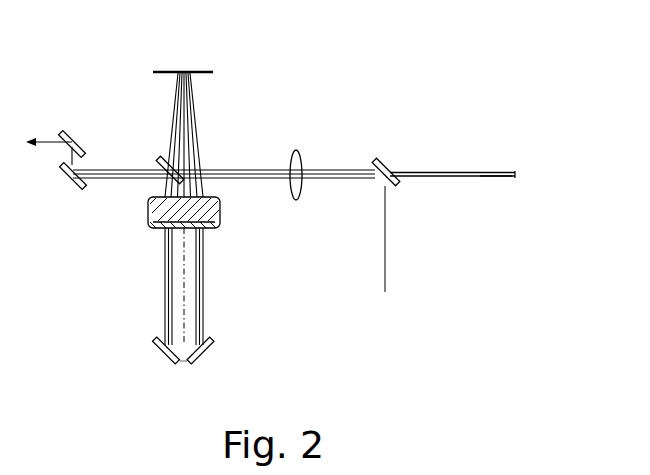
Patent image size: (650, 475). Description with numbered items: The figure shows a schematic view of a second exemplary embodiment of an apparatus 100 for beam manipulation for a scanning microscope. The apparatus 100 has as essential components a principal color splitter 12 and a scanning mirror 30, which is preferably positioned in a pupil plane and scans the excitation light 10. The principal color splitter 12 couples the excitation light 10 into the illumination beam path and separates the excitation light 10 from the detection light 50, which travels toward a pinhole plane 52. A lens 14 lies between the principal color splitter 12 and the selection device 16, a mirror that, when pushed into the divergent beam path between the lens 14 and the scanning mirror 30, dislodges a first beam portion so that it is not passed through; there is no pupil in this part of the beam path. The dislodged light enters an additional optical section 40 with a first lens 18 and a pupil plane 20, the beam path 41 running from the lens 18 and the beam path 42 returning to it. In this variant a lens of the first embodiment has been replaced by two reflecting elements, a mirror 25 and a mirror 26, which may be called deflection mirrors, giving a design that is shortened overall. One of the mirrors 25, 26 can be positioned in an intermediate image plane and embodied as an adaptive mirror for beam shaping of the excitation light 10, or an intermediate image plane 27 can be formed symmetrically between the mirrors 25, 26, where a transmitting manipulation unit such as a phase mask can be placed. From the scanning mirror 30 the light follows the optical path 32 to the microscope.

The apparatus 100 is at (80, 258).
The excitation light 10 is at (387, 282).
The principal color splitter 12 is at (380, 160).
The lens 14 is at (297, 151).
The selection device 16 is at (173, 156).
The lens 18 is at (206, 216).
The pupil plane 20 is at (181, 46).
The mirror 25 is at (155, 348).
The mirror 26 is at (212, 345).
The intermediate image plane 27 is at (182, 362).
The scanning mirror 30 is at (60, 162).
The optical path to the microscope 32 is at (42, 142).
The additional optical section 40 is at (160, 131).
The beam path from the first lens to the second lens 41 is at (203, 283).
The beam path from the second lens to the first lens 42 is at (165, 276).
The detection light 50 is at (486, 177).
The pinhole plane 52 is at (516, 173).